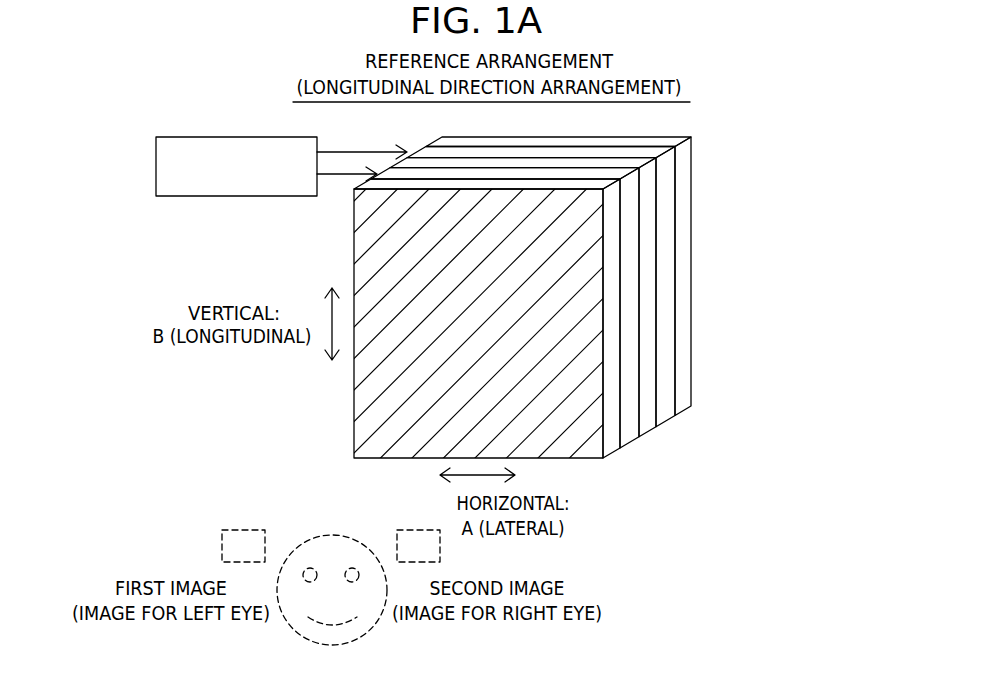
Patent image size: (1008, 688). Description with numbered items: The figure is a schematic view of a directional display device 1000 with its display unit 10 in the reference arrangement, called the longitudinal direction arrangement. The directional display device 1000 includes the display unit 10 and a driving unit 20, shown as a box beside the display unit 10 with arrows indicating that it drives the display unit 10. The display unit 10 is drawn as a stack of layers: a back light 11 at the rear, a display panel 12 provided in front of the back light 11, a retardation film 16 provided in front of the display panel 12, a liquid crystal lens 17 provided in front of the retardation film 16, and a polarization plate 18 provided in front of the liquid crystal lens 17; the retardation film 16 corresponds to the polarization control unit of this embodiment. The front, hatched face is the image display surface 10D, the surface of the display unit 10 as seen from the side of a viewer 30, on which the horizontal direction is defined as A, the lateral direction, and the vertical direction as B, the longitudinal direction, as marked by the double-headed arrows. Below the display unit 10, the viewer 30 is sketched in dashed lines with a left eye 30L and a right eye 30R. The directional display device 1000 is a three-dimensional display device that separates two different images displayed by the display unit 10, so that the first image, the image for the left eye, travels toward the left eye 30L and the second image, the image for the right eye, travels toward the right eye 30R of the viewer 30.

The directional display device 1000 is at (846, 102).
The display unit 10 is at (560, 337).
The image display surface 10D is at (563, 418).
The back light 11 is at (688, 412).
The display panel 12 is at (667, 424).
The retardation film 16 is at (647, 436).
The liquid crystal lens 17 is at (623, 447).
The polarization plate 18 is at (612, 456).
The driving unit 20 is at (178, 137).
The viewer 30 is at (334, 586).
The left eye 30L is at (312, 567).
The right eye 30R is at (352, 567).